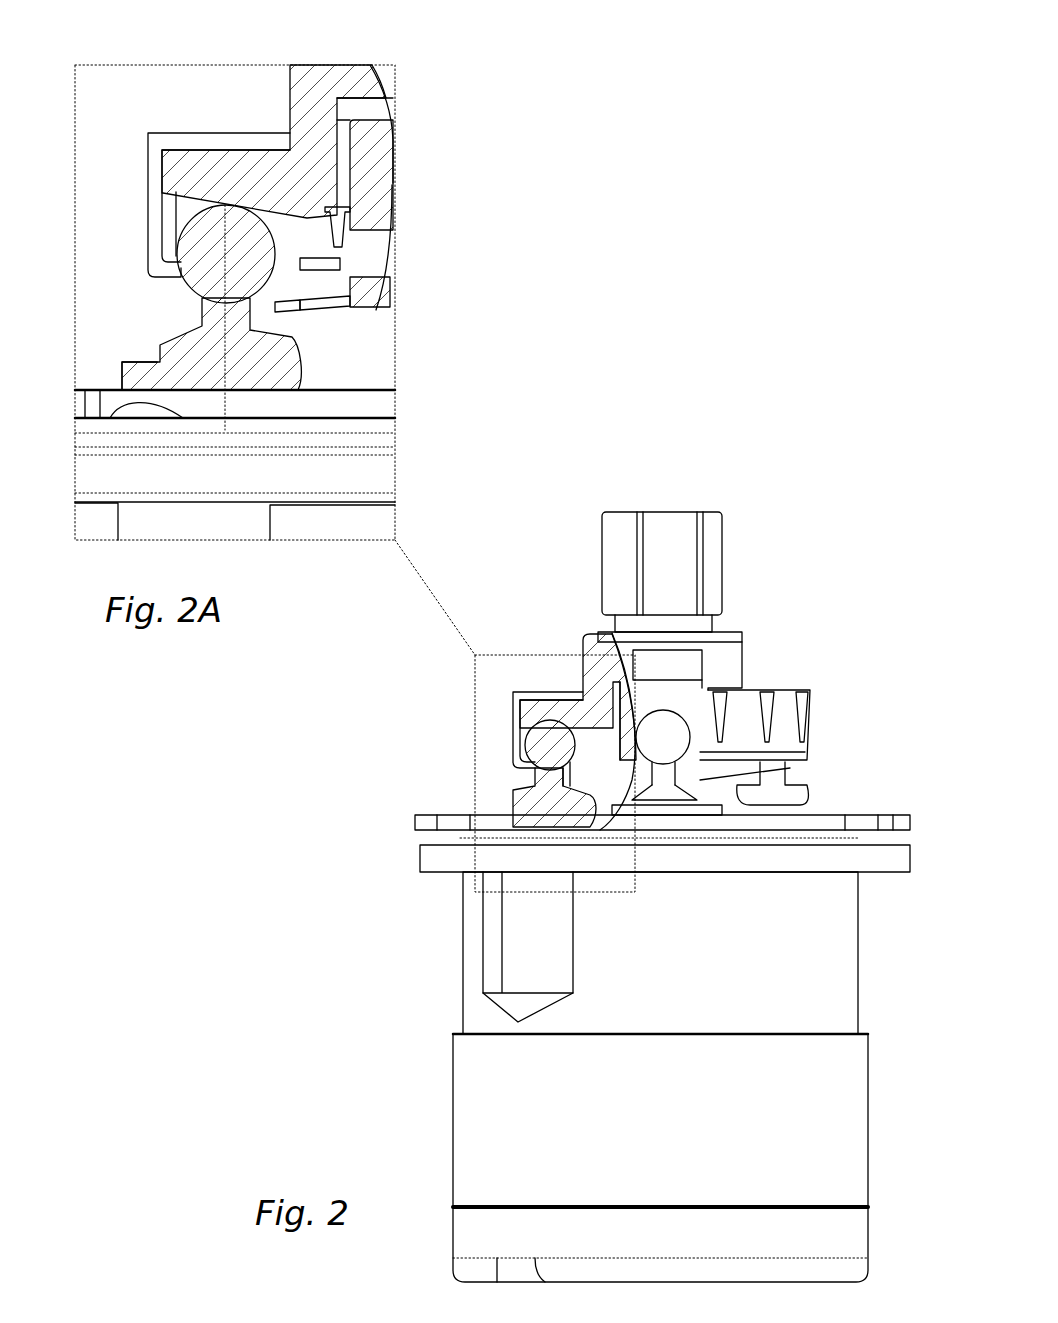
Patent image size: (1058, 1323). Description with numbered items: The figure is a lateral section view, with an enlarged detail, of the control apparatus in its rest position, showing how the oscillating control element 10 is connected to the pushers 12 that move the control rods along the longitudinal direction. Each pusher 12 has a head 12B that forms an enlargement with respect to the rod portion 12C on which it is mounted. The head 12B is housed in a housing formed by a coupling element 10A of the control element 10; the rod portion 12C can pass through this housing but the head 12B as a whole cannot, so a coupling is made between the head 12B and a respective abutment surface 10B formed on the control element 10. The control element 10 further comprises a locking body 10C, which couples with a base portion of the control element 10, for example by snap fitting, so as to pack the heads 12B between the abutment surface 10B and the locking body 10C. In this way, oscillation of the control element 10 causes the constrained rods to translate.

In FIG. 2, the control element 10 is at (767, 672).
In FIG. 2A, the coupling element 10A is at (132, 262).
In FIG. 2, the coupling element 10A is at (697, 775).
In FIG. 2A, the abutment surface 10B is at (275, 283).
In FIG. 2, the abutment surface 10B is at (518, 763).
In FIG. 2A, the locking body 10C is at (303, 165).
In FIG. 2, the locking body 10C is at (575, 700).
In FIG. 2A, the pusher 12 is at (262, 378).
In FIG. 2, the pusher 12 is at (530, 800).
In FIG. 2A, the head 12B is at (258, 252).
In FIG. 2, the head 12B is at (535, 742).
In FIG. 2A, the rod portion 12C is at (232, 315).